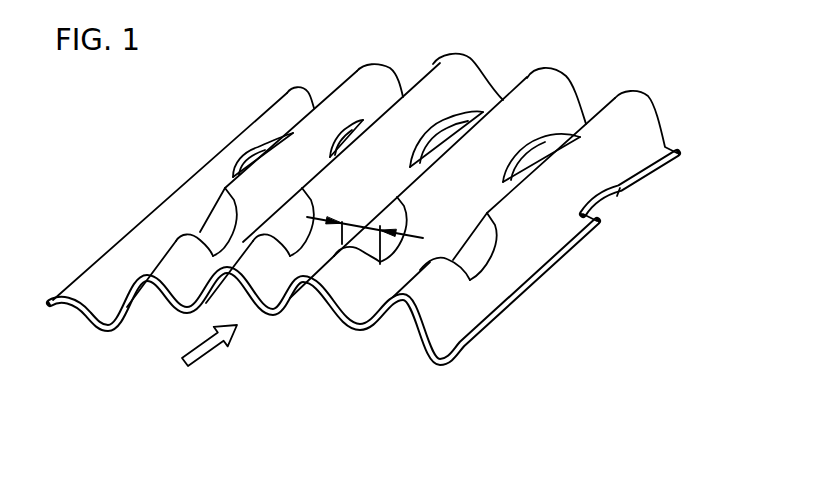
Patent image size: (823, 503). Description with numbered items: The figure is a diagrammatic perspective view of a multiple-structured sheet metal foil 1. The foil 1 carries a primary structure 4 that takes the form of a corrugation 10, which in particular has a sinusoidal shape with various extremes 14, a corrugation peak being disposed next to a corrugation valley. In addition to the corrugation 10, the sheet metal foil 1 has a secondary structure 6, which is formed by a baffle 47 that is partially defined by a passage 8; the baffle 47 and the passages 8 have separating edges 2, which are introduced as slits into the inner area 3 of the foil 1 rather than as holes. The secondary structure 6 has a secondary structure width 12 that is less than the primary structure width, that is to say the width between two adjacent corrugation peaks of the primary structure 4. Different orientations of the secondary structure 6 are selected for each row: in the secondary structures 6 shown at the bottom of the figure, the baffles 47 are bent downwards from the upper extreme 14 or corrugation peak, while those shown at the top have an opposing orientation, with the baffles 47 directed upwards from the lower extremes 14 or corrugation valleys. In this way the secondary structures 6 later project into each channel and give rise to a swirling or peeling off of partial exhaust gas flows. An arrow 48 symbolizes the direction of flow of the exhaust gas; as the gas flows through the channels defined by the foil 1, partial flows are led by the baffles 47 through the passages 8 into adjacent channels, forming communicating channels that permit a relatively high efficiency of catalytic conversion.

The sheet metal foil 1 is at (680, 157).
The separating edges 2 is at (495, 243).
The inner area 3 is at (452, 213).
The primary structure 4 is at (476, 66).
The secondary structure 6 is at (215, 228).
The passage 8 is at (410, 154).
The corrugation 10 is at (127, 308).
The secondary structure width 12 is at (362, 226).
The extremes 14 is at (552, 70).
The baffle 47 is at (292, 227).
The arrow 48 is at (224, 349).